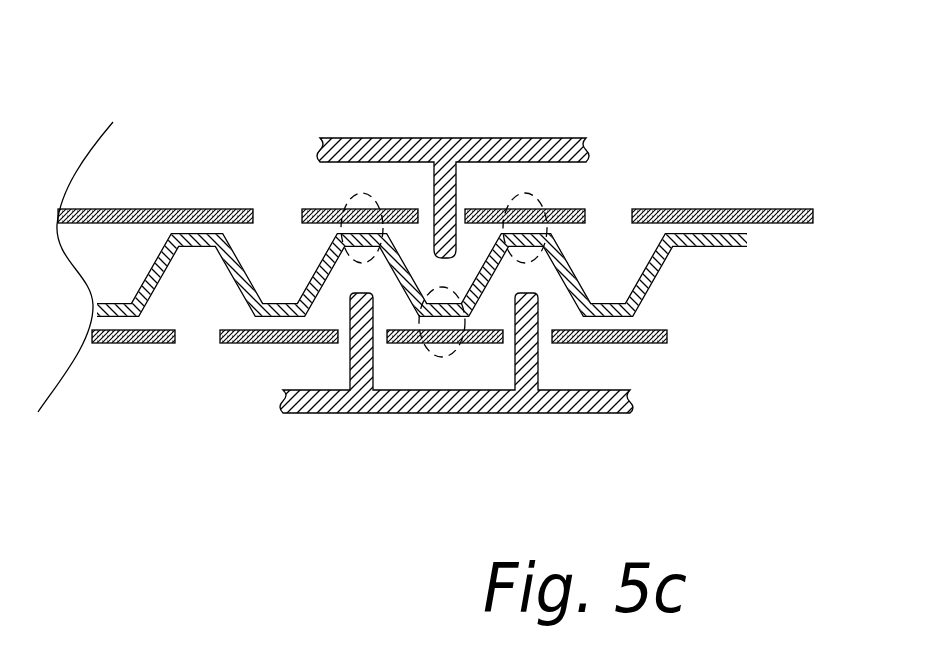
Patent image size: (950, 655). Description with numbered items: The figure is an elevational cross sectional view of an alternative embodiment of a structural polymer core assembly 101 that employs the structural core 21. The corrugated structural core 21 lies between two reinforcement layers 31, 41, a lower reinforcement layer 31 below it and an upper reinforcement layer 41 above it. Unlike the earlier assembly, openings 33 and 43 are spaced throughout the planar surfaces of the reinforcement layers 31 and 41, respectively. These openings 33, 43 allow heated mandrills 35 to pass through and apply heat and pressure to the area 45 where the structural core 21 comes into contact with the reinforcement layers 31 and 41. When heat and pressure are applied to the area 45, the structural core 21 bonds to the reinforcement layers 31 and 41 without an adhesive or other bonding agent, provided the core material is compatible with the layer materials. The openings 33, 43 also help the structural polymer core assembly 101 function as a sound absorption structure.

The structural polymer core assembly 101 is at (112, 75).
The structural core 21 is at (658, 270).
The reinforcement layer 31 is at (668, 336).
The opening 33 is at (190, 338).
The heated mandrill 35 is at (350, 357).
The reinforcement layer 41 is at (802, 210).
The opening 43 is at (282, 218).
The area 45 is at (358, 193).